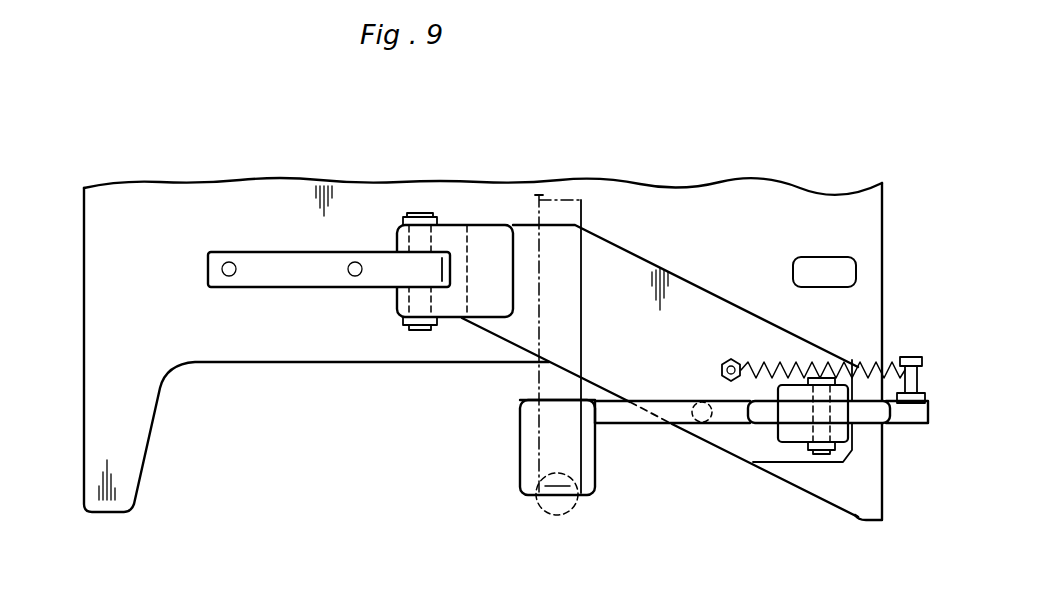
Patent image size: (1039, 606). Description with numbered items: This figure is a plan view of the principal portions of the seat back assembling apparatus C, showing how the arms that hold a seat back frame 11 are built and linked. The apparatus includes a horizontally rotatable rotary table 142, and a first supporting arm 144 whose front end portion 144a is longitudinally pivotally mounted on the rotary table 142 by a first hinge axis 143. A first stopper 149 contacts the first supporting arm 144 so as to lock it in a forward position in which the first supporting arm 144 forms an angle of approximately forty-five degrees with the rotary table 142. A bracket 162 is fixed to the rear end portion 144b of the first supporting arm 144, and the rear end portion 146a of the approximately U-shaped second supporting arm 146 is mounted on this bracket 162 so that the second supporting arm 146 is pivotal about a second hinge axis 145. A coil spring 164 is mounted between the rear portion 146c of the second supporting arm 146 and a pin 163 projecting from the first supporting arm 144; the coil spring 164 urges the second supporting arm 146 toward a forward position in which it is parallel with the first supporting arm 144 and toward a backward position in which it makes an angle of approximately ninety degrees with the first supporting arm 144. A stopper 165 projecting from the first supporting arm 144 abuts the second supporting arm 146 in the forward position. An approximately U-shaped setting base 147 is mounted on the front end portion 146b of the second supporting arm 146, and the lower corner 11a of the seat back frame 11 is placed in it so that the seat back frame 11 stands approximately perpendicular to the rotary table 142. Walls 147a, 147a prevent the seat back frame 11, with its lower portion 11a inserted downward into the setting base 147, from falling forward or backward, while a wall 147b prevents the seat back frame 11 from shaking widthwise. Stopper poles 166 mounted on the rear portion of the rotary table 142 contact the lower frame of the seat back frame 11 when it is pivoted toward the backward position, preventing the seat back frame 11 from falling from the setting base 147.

The seat back frame 11 is at (583, 290).
The lower corner of the seat back frame 11a is at (526, 493).
The rotary table 142 is at (308, 364).
The seat back assembling apparatus C is at (376, 374).
The first hinge axis 143 is at (421, 331).
The first supporting arm 144 is at (668, 380).
The front end portion of the first supporting arm 144a is at (457, 305).
The rear end portion of the first supporting arm 144b is at (857, 466).
The second hinge axis 145 is at (812, 456).
The second supporting arm 146 is at (736, 410).
The rear end portion of the second supporting arm 146a is at (884, 422).
The front end portion of the second supporting arm 146b is at (606, 425).
The rear portion of the second supporting arm 146c is at (930, 421).
The setting base 147 is at (588, 500).
The wall of the setting base 147a is at (548, 462).
The wall of the setting base 147b is at (558, 482).
The first stopper 149 is at (375, 252).
The bracket 162 is at (840, 445).
The pin 163 is at (733, 358).
The coil spring 164 is at (812, 362).
The stopper 165 is at (700, 400).
The stopper pole 166 is at (845, 275).